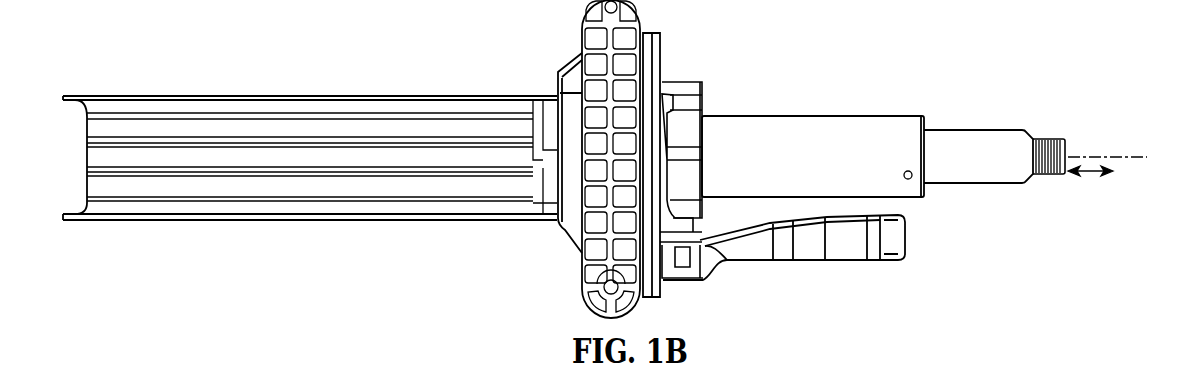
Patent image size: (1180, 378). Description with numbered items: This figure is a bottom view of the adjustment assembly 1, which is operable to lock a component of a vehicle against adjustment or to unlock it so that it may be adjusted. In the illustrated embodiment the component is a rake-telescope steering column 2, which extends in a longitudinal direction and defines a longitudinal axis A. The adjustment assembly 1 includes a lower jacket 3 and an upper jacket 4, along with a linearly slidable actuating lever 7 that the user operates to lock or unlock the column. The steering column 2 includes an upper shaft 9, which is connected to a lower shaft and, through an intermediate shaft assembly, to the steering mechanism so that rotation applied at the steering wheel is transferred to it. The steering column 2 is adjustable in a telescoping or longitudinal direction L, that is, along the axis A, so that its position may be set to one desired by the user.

The adjustment assembly 1 is at (707, 207).
The steering column 2 is at (1043, 138).
The lower jacket 3 is at (383, 221).
The upper jacket 4 is at (811, 116).
The actuating lever 7 is at (915, 237).
The upper shaft 9 is at (932, 128).
The longitudinal axis A is at (1116, 158).
The longitudinal direction L is at (1097, 173).